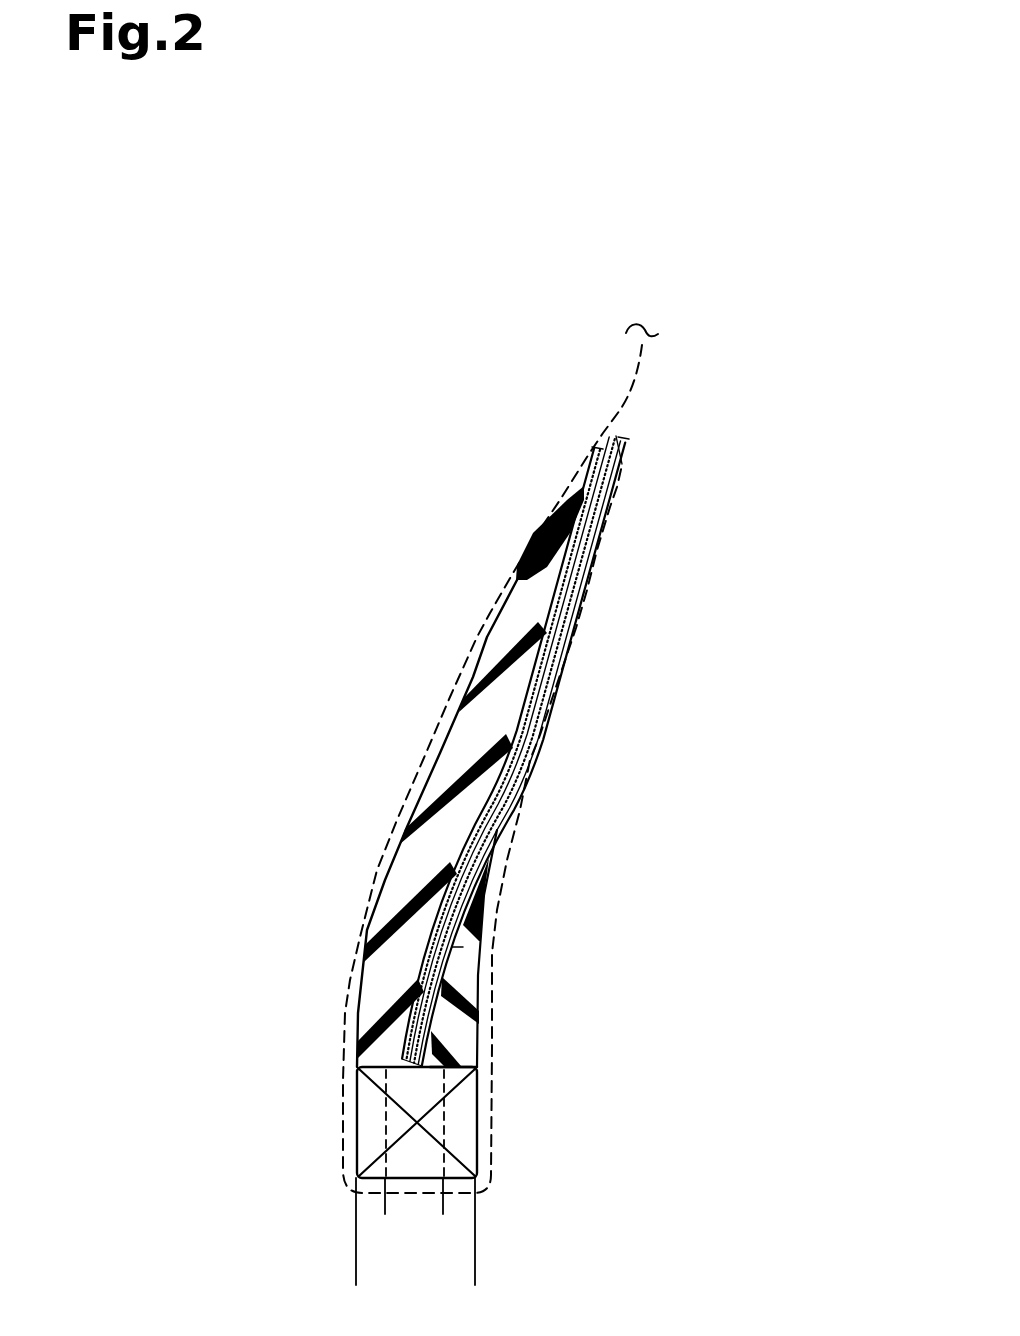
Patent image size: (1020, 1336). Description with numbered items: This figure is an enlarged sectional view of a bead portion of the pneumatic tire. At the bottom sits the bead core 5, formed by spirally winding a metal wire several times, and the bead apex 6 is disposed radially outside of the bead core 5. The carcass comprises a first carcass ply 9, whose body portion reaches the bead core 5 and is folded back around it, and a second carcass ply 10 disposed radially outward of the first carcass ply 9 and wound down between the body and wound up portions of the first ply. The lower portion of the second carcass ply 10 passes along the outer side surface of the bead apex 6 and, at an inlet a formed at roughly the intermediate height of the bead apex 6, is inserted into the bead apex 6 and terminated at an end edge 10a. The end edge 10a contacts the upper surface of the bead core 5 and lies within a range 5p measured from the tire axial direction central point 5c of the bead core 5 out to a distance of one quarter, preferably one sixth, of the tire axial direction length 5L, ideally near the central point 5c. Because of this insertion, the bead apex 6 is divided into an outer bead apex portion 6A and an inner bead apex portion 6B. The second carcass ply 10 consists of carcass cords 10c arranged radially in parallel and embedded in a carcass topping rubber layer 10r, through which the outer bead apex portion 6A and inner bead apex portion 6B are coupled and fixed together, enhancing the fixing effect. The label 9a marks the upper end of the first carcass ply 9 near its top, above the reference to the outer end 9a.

The bead core 5 is at (356, 1120).
The tire axial direction central point 5c is at (442, 1053).
The range 5p is at (303, 1212).
The tire axial direction length 5L is at (475, 1275).
The bead apex 6 is at (303, 632).
The outer bead apex portion 6A is at (445, 878).
The inner bead apex portion 6B is at (503, 697).
The first carcass ply 9 is at (348, 973).
The outer end 9a is at (624, 448).
The second carcass ply 10 is at (595, 597).
The carcass topping rubber layer 10r is at (437, 923).
The carcass cords 10c is at (453, 947).
The end edge 10a is at (398, 1066).
The inlet a is at (517, 824).